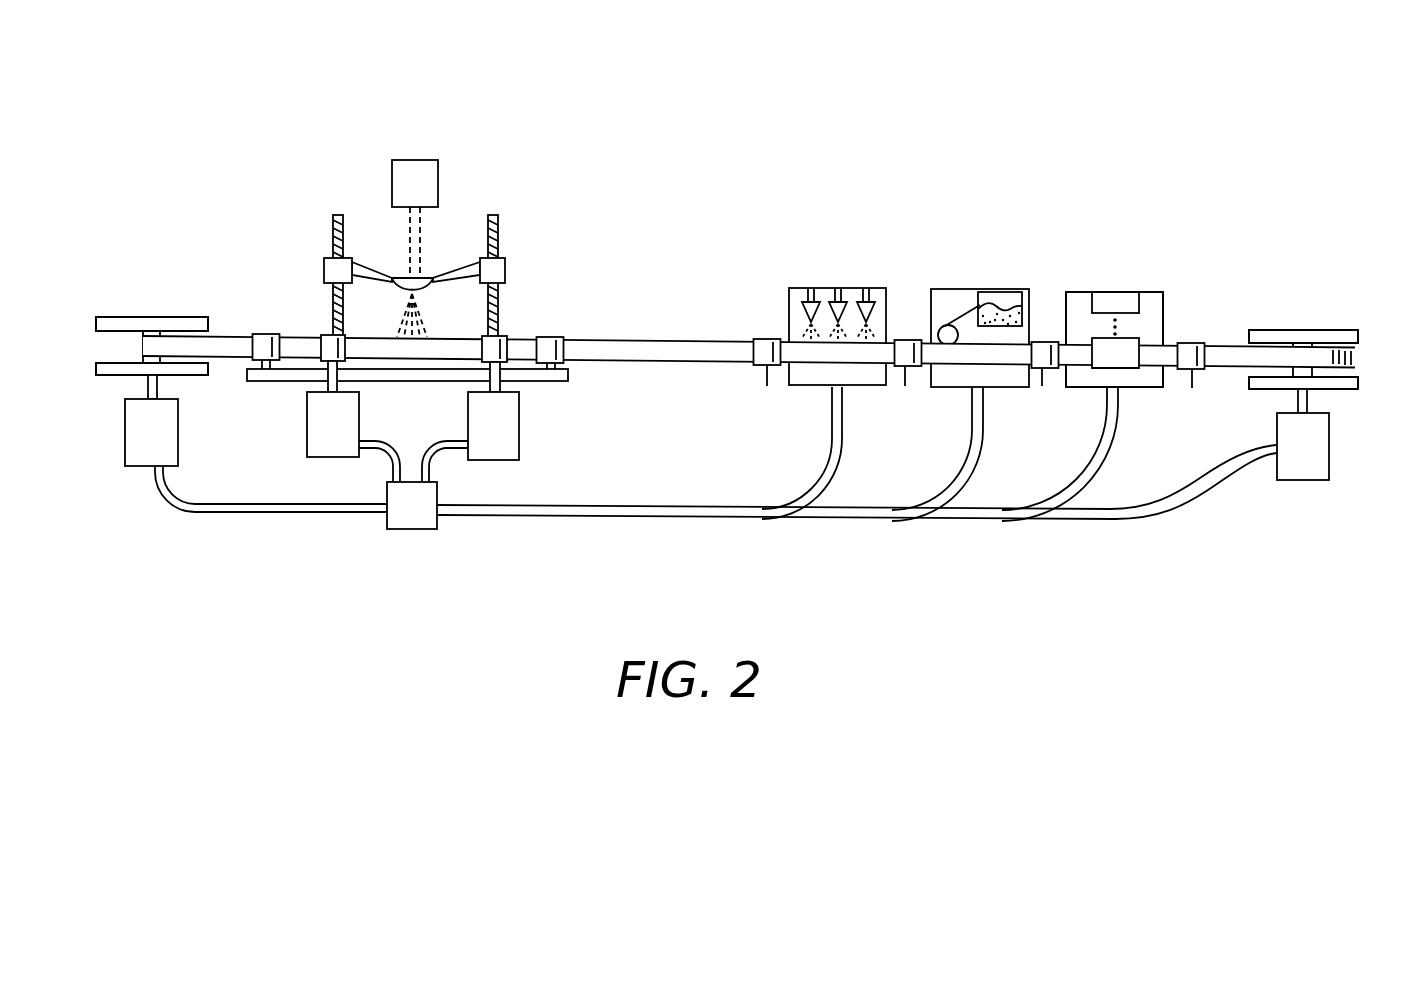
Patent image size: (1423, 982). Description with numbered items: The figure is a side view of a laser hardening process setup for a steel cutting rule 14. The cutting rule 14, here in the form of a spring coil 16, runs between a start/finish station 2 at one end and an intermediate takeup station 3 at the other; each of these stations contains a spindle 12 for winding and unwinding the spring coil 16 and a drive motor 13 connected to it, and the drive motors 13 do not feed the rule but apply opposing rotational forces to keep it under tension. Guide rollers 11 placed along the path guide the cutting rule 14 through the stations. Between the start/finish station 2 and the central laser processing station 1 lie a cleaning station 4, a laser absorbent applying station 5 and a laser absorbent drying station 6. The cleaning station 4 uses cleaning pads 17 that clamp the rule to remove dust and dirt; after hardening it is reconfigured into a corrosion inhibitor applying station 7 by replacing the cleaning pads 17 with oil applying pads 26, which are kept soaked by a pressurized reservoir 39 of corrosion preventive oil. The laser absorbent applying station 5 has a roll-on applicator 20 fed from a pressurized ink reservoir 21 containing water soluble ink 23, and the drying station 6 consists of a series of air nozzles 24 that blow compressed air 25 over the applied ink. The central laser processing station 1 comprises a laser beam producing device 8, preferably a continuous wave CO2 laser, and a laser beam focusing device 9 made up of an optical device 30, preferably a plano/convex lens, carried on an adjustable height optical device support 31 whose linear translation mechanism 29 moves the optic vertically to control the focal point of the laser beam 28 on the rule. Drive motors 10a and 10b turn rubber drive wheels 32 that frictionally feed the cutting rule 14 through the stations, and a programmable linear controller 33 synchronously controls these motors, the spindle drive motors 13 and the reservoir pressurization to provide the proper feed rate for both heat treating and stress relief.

The central laser processing station 1 is at (604, 120).
The start/finish station 2 is at (1302, 303).
The intermediate takeup station 3 is at (138, 270).
The cleaning station 4 is at (1138, 291).
The laser absorbent applying station 5 is at (987, 290).
The laser absorbent drying station 6 is at (823, 289).
The corrosion inhibitor applying station 7 is at (1152, 266).
The laser beam producing device 8 is at (438, 174).
The laser beam focusing device 9 is at (427, 260).
The drive motor 10a is at (520, 428).
The drive motor 10b is at (307, 436).
The guide rollers 11 is at (263, 332).
The spindle 12 is at (176, 318).
The drive motor 13 is at (127, 445).
The cutting rule 14 is at (612, 362).
The spring coil 16 is at (1358, 355).
The cleaning pads 17 is at (1125, 370).
The applicator 20 is at (942, 326).
The ink reservoir 21 is at (985, 302).
The water soluble ink 23 is at (1015, 298).
The air nozzles 24 is at (866, 288).
The compressed air 25 is at (807, 325).
The oil applying pads 26 is at (1130, 360).
The laser beam 28 is at (403, 296).
The linear translation mechanism 29 is at (505, 268).
The optical device 30 is at (428, 290).
The adjustable height optical device support 31 is at (455, 272).
The drive wheels 32 is at (335, 334).
The programmable linear controller 33 is at (423, 528).
The reservoir 39 is at (1135, 297).